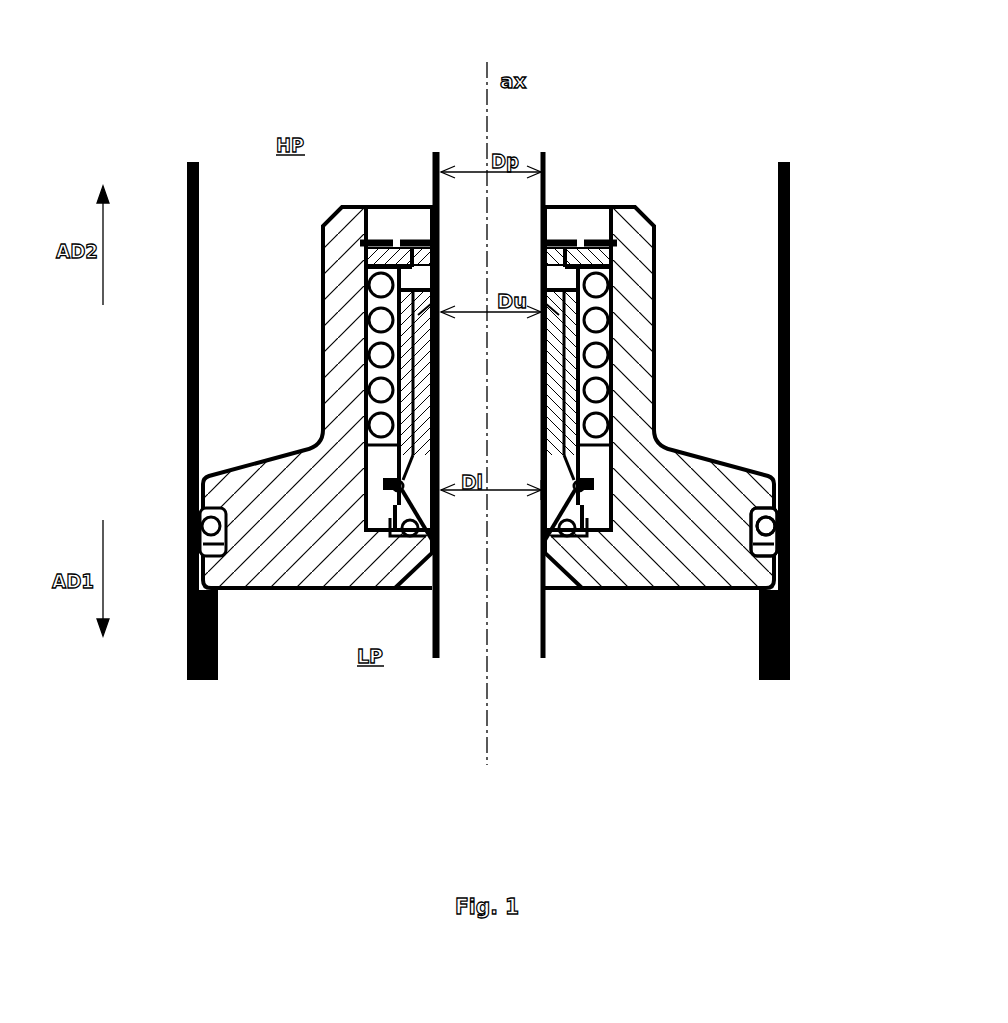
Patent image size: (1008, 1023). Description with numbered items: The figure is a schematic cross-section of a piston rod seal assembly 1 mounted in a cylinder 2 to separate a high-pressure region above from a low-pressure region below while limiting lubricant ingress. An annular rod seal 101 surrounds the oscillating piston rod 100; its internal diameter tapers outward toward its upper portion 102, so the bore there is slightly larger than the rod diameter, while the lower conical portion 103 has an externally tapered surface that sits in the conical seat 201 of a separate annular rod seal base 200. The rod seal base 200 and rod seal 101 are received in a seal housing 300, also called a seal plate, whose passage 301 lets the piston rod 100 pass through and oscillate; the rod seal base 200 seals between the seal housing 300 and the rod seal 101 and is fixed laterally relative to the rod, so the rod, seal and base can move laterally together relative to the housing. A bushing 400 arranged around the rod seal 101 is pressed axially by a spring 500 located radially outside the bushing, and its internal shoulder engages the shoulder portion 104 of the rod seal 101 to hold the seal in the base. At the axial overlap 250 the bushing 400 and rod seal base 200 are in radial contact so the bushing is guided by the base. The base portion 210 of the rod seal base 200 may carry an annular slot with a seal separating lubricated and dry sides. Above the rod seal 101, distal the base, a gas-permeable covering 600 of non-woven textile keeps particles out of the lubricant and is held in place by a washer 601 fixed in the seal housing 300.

The piston rod seal assembly 1 is at (221, 113).
The cylinder 2 is at (742, 196).
The piston rod 100 is at (515, 205).
The rod seal 101 is at (378, 336).
The upper portion of the rod seal 102 is at (620, 266).
The lower conical portion of the rod seal 103 is at (655, 453).
The shoulder portion of the rod seal 104 is at (625, 430).
The rod seal base 200 is at (614, 505).
The conical seat 201 is at (538, 489).
The base portion of the rod seal base 210 is at (588, 540).
The axial overlap 250 is at (776, 546).
The seal housing 300 is at (297, 478).
The passage 301 is at (366, 572).
The bushing 400 is at (616, 360).
The spring 500 is at (612, 396).
The covering 600 is at (600, 206).
The washer 601 is at (676, 208).